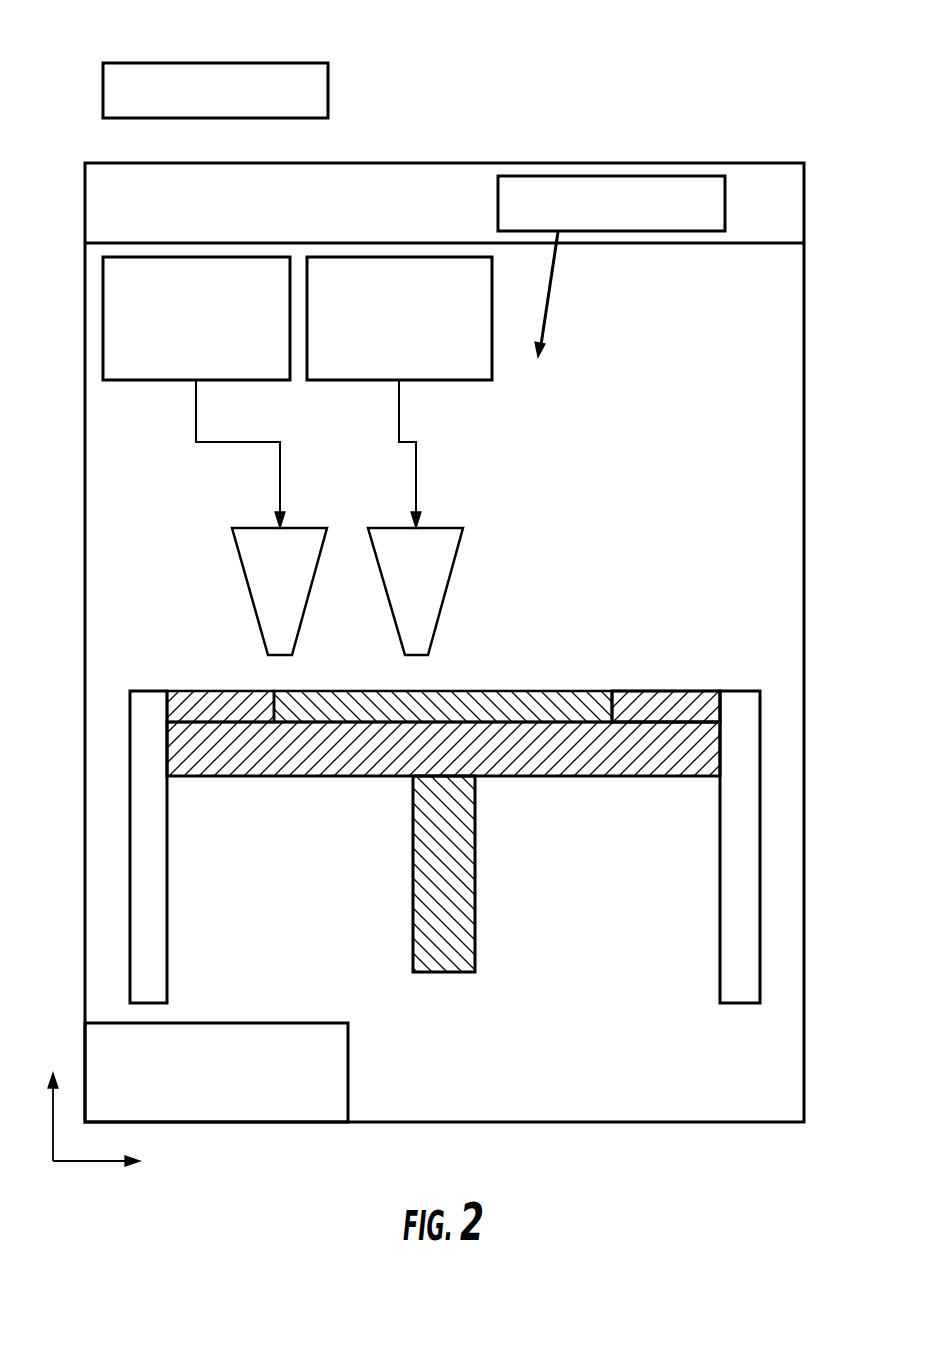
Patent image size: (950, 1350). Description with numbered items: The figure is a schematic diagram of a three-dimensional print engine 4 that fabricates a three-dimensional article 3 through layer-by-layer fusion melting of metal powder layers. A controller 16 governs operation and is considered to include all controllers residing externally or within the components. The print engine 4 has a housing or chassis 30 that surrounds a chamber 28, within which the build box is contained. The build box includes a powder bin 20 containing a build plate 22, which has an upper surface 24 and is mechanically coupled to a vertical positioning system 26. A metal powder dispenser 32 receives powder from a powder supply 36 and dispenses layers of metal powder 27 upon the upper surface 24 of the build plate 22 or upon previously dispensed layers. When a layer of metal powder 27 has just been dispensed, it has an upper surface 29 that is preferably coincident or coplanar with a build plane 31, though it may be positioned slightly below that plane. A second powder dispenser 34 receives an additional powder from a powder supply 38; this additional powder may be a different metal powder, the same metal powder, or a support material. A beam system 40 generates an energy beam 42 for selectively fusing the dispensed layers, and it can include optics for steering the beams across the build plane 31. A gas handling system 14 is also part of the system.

The print engine 4 is at (731, 50).
The controller 16 is at (177, 63).
The beam system 40 is at (567, 176).
The energy beam 42 is at (556, 275).
The powder supply 38 is at (146, 380).
The powder supply 36 is at (461, 380).
The second powder dispenser 34 is at (254, 606).
The metal powder dispenser 32 is at (442, 606).
The housing or chassis 30 is at (804, 400).
The chamber 28 is at (679, 416).
The powder bin 20 is at (760, 843).
The build plate 22 is at (638, 762).
The metal powder 27 is at (220, 702).
The three-dimensional article 3 is at (497, 703).
The upper surface 24 is at (655, 720).
The upper surface 29 is at (633, 690).
The build plane 31 is at (666, 666).
The vertical positioning system 26 is at (467, 912).
The gas handling system 14 is at (246, 1023).